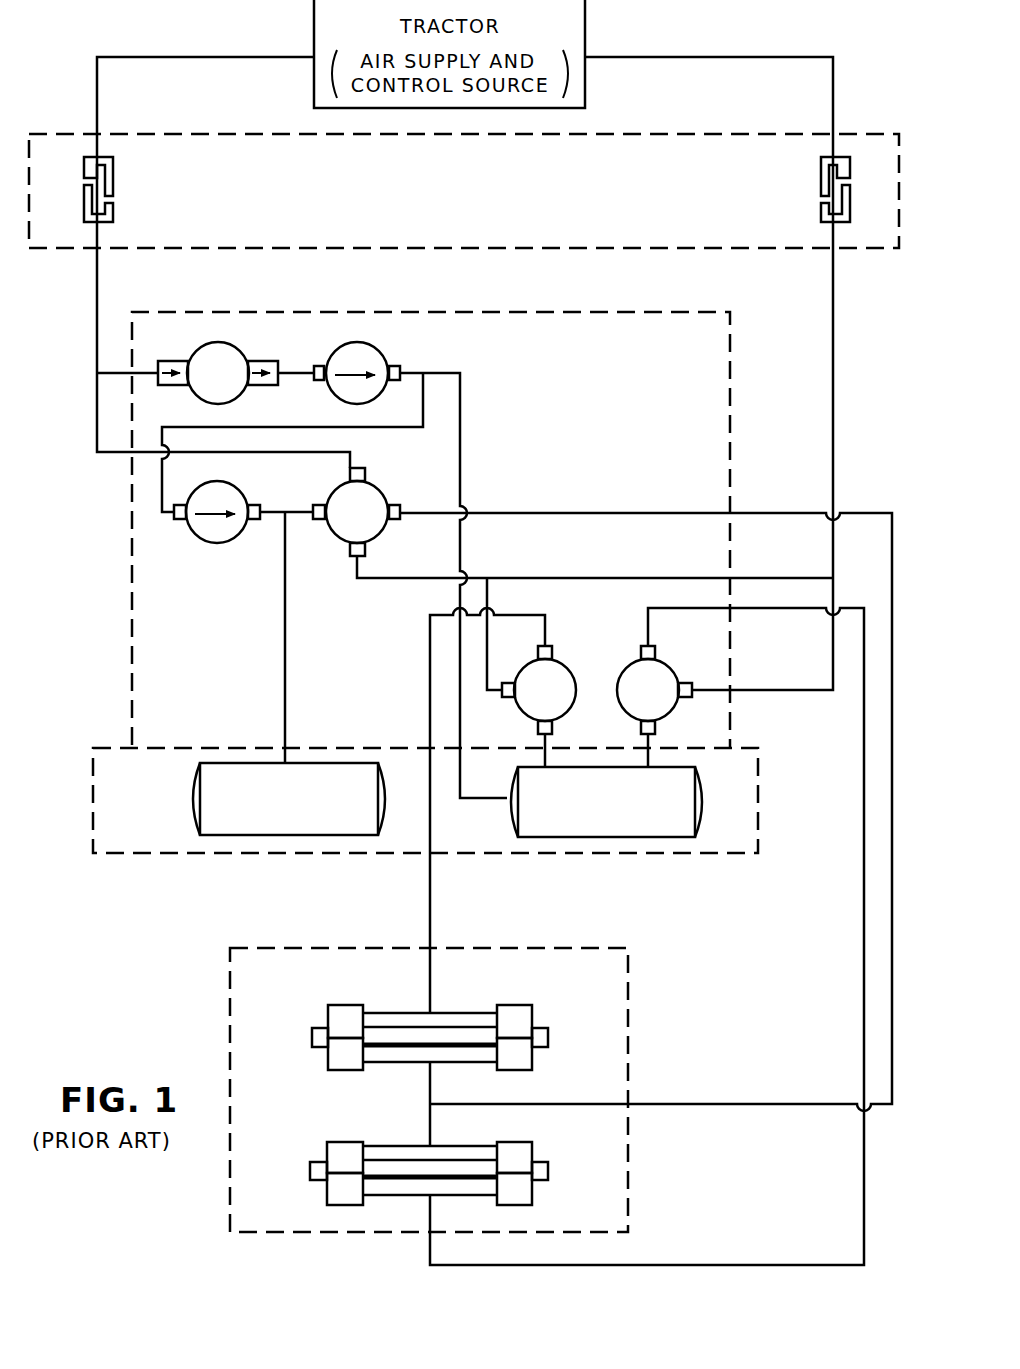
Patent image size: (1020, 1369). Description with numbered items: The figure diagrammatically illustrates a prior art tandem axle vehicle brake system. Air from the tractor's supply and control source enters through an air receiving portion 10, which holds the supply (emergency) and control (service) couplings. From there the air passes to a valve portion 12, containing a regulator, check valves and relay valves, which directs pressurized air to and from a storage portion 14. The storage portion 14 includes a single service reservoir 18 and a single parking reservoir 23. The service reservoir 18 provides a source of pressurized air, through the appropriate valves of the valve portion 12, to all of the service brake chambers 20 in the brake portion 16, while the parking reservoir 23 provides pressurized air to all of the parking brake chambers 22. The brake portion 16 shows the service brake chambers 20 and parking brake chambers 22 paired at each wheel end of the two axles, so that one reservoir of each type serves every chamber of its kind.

The air receiving portion 10 is at (870, 136).
The valve portion 12 is at (733, 352).
The storage portion 14 is at (761, 786).
The brake portion 16 is at (631, 963).
The service reservoir 18 is at (704, 820).
The service brake chambers 20 is at (326, 1014).
The parking brake chambers 22 is at (326, 1060).
The parking reservoir 23 is at (190, 815).